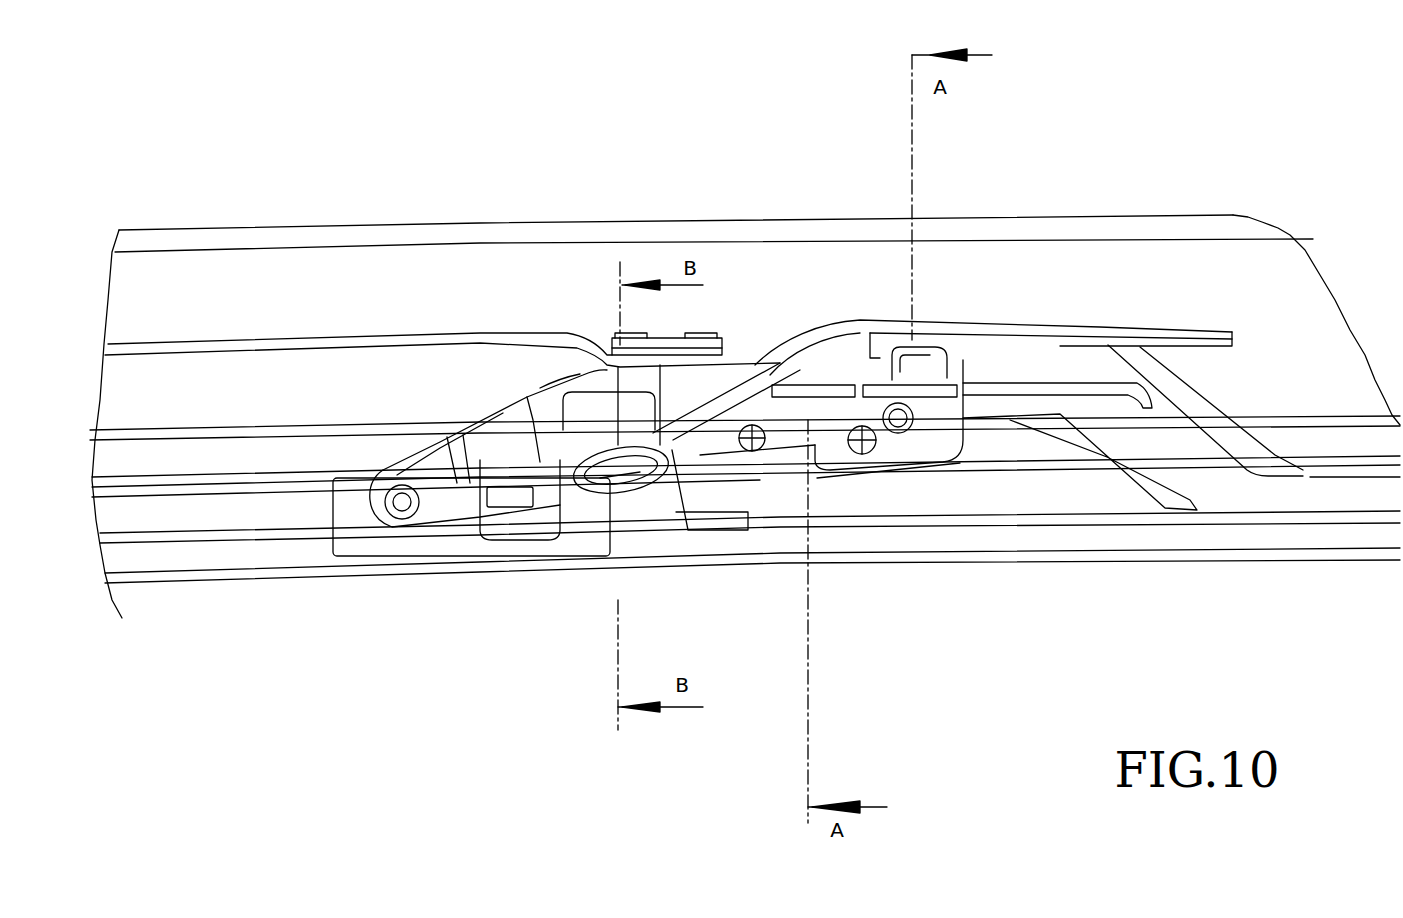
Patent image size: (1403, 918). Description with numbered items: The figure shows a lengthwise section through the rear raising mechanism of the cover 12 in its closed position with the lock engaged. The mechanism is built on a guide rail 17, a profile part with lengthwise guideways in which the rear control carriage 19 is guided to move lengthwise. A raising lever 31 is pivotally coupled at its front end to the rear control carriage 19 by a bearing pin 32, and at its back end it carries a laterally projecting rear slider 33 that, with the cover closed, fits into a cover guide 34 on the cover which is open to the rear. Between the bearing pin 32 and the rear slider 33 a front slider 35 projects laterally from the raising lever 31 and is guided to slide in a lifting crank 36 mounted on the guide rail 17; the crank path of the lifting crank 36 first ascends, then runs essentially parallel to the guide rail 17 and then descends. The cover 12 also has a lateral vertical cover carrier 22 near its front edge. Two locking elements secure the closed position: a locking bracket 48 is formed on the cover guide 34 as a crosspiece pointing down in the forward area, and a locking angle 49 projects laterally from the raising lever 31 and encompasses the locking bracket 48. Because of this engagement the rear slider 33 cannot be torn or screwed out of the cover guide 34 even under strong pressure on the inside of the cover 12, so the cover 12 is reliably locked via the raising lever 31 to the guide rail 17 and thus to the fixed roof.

The cover 12 is at (1177, 231).
The guide rail 17 is at (1031, 574).
The rear control carriage 19 is at (362, 518).
The cover carrier 22 is at (183, 338).
The raising lever 31 is at (603, 370).
The bearing pin 32 is at (401, 506).
The rear slider 33 is at (938, 355).
The cover guide 34 is at (1032, 382).
The front slider 35 is at (618, 490).
The lifting crank 36 is at (651, 500).
The locking bracket 48 is at (792, 392).
The locking angle 49 is at (830, 445).